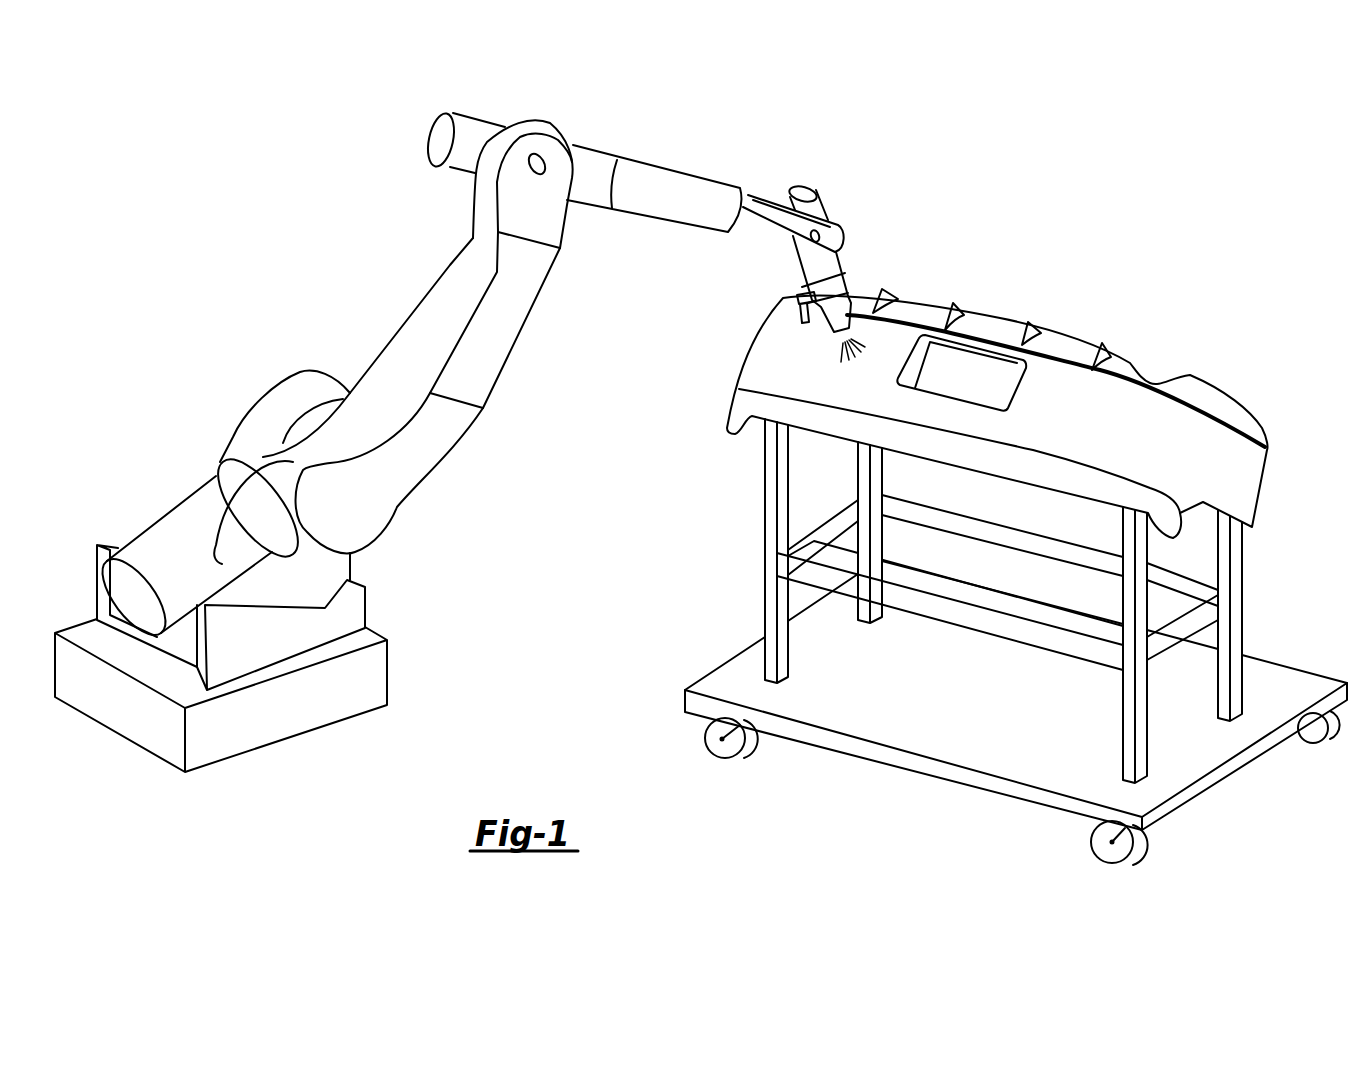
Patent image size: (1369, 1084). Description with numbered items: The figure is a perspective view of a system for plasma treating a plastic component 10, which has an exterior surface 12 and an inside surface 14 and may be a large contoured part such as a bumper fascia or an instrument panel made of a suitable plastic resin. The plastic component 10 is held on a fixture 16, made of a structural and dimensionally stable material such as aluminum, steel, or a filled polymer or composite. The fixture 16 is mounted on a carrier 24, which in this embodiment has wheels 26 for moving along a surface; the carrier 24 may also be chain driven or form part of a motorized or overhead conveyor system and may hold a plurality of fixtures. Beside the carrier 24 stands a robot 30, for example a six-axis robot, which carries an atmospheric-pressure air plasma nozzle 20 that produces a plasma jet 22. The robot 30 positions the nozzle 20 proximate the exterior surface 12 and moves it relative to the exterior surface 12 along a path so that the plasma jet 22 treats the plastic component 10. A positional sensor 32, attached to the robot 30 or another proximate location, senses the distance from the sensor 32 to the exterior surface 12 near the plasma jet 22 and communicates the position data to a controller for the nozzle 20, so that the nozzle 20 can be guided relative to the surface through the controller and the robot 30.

The plastic component 10 is at (1273, 385).
The exterior surface 12 is at (1220, 462).
The inside surface 14 is at (1137, 368).
The fixture 16 is at (1235, 582).
The atmospheric-pressure air plasma nozzle 20 is at (838, 345).
The plasma jet 22 is at (840, 360).
The carrier 24 is at (986, 702).
The wheels 26 is at (748, 742).
The robot 30 is at (460, 441).
The positional sensor 32 is at (794, 293).